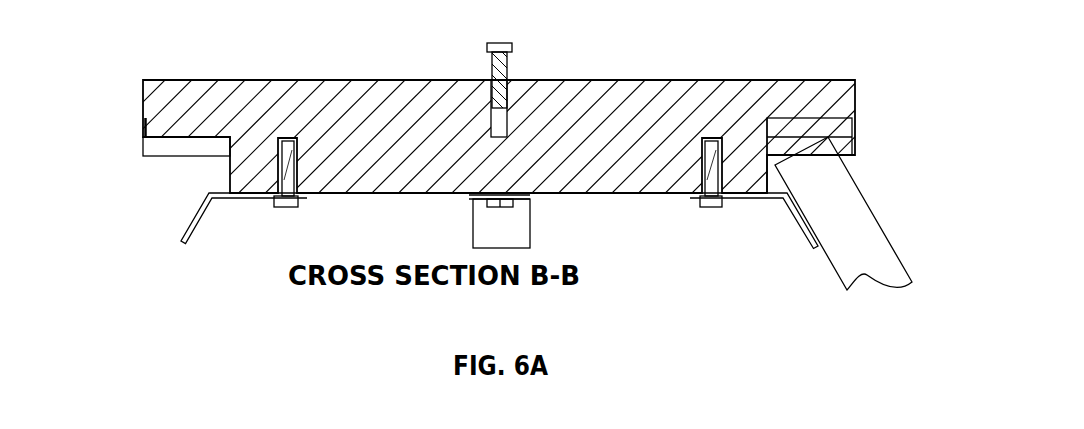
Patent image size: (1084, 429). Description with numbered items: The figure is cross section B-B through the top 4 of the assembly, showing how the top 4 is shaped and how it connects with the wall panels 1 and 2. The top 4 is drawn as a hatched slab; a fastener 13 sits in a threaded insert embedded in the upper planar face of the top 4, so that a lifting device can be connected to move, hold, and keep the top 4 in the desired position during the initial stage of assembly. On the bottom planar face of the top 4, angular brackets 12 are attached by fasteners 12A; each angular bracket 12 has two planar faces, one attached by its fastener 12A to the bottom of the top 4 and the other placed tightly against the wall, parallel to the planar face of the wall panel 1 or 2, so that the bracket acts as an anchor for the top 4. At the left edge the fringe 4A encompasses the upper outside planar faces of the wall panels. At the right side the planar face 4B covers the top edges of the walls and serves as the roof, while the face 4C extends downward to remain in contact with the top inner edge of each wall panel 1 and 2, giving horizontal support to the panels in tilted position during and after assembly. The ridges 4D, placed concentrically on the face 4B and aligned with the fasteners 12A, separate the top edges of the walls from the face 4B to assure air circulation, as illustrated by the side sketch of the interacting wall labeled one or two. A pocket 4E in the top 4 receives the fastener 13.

The top 4 is at (338, 107).
The fringe 4A is at (143, 139).
The planar face 4B is at (783, 117).
The face 4C is at (773, 163).
The ridges 4D is at (823, 127).
The bolt hole 4E is at (490, 128).
The fastener 13 is at (500, 63).
The angular bracket 12 is at (790, 212).
The fastener 12A is at (703, 196).
The wall panel 1 is at (843, 213).
The wall panel 2 is at (897, 263).